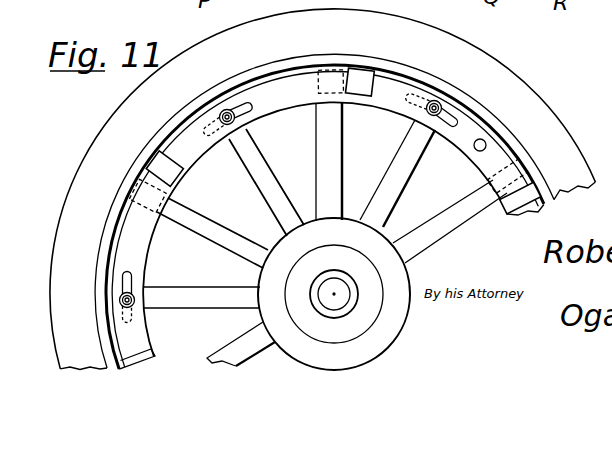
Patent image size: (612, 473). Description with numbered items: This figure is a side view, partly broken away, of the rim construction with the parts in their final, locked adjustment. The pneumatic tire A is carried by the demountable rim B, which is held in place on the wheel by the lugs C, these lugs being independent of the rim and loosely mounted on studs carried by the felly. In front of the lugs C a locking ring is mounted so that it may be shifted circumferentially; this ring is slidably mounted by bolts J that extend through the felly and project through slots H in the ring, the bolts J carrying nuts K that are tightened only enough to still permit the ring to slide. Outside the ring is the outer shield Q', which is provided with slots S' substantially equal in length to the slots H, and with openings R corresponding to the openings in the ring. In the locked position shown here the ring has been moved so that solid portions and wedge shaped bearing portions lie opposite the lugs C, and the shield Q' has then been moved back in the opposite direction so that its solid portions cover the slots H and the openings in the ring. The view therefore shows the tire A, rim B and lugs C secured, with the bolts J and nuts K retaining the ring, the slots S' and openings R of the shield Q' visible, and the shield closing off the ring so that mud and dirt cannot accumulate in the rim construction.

The pneumatic tire A is at (546, 115).
The demountable rim B is at (516, 143).
The lugs C is at (364, 66).
The nuts K is at (436, 106).
The bolts J is at (419, 115).
The slots S' is at (260, 122).
The openings R is at (360, 80).
The slots H is at (224, 128).
The outer shield Q' is at (325, 229).